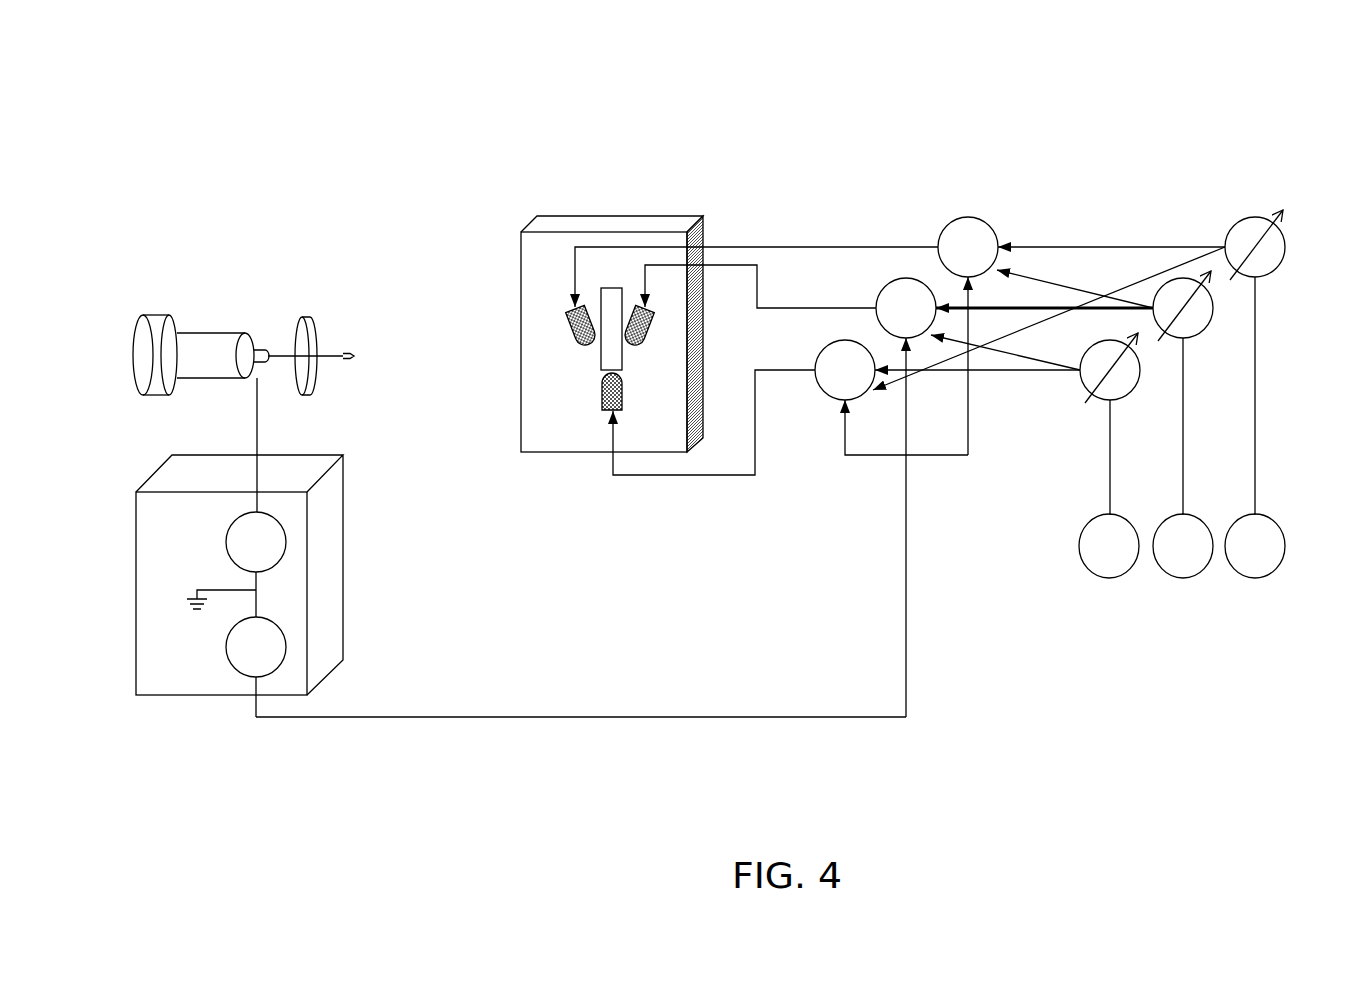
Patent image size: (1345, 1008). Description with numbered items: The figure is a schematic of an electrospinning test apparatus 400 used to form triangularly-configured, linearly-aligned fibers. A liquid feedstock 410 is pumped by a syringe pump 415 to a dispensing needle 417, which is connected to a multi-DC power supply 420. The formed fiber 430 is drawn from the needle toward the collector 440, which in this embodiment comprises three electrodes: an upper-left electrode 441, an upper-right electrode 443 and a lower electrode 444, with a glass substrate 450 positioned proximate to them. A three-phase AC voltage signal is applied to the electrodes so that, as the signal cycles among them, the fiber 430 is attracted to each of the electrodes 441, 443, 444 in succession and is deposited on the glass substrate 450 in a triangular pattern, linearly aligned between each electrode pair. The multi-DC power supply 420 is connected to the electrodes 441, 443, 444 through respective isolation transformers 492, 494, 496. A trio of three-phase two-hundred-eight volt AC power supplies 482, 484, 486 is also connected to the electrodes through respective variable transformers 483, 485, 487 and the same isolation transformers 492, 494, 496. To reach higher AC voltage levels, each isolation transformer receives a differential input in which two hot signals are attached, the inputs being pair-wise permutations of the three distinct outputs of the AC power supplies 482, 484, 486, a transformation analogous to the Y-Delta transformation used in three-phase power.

The electrospinning test apparatus 400 is at (1140, 170).
The liquid feedstock 410 is at (198, 348).
The syringe pump 415 is at (143, 393).
The dispensing needle 417 is at (330, 362).
The multi-DC power supply 420 is at (227, 697).
The formed fiber 430 is at (305, 315).
The collector 440 is at (618, 212).
The upper-left electrode 441 is at (570, 318).
The upper-right electrode 443 is at (638, 317).
The lower electrode 444 is at (608, 410).
The glass substrate 450 is at (608, 347).
The AC power supply 482 is at (1257, 576).
The variable transformer 483 is at (1278, 362).
The AC power supply 484 is at (1185, 583).
The variable transformer 485 is at (1205, 393).
The AC power supply 486 is at (1107, 574).
The variable transformer 487 is at (1128, 424).
The isolation transformer 492 is at (1050, 322).
The isolation transformer 494 is at (984, 487).
The isolation transformer 496 is at (988, 351).